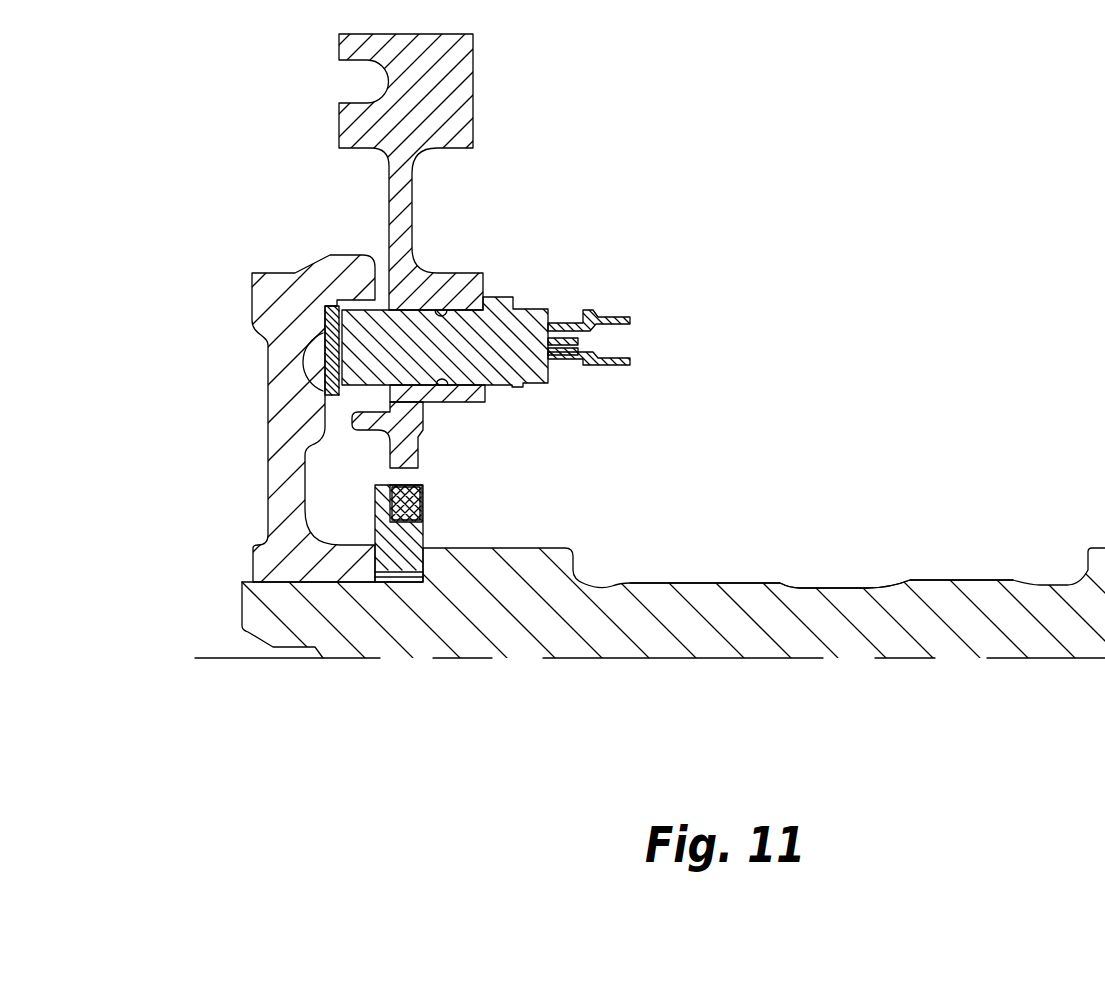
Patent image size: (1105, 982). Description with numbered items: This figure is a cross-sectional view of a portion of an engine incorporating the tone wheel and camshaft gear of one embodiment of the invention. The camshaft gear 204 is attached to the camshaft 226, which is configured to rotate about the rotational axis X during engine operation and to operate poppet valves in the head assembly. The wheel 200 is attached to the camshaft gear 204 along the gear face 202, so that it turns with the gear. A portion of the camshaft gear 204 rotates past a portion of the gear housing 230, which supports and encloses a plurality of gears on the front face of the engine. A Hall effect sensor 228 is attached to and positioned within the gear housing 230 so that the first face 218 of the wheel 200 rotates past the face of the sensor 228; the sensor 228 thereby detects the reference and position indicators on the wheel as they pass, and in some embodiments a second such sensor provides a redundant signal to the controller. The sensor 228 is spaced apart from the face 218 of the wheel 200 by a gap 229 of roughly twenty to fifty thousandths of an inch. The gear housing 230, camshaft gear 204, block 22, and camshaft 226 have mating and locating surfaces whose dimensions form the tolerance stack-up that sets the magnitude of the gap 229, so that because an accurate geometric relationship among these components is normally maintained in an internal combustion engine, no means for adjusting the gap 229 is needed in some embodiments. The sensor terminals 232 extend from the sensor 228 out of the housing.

The gear housing 230 is at (452, 94).
The first face 218 is at (389, 297).
The gap 229 is at (341, 387).
The Hall effect sensor 228 is at (390, 340).
The sensor terminals 232 is at (548, 385).
The gear face 202 is at (325, 321).
The wheel 200 is at (330, 358).
The camshaft gear 204 is at (266, 437).
The block 22 is at (424, 538).
The camshaft 226 is at (818, 588).
The rotational axis X is at (212, 656).